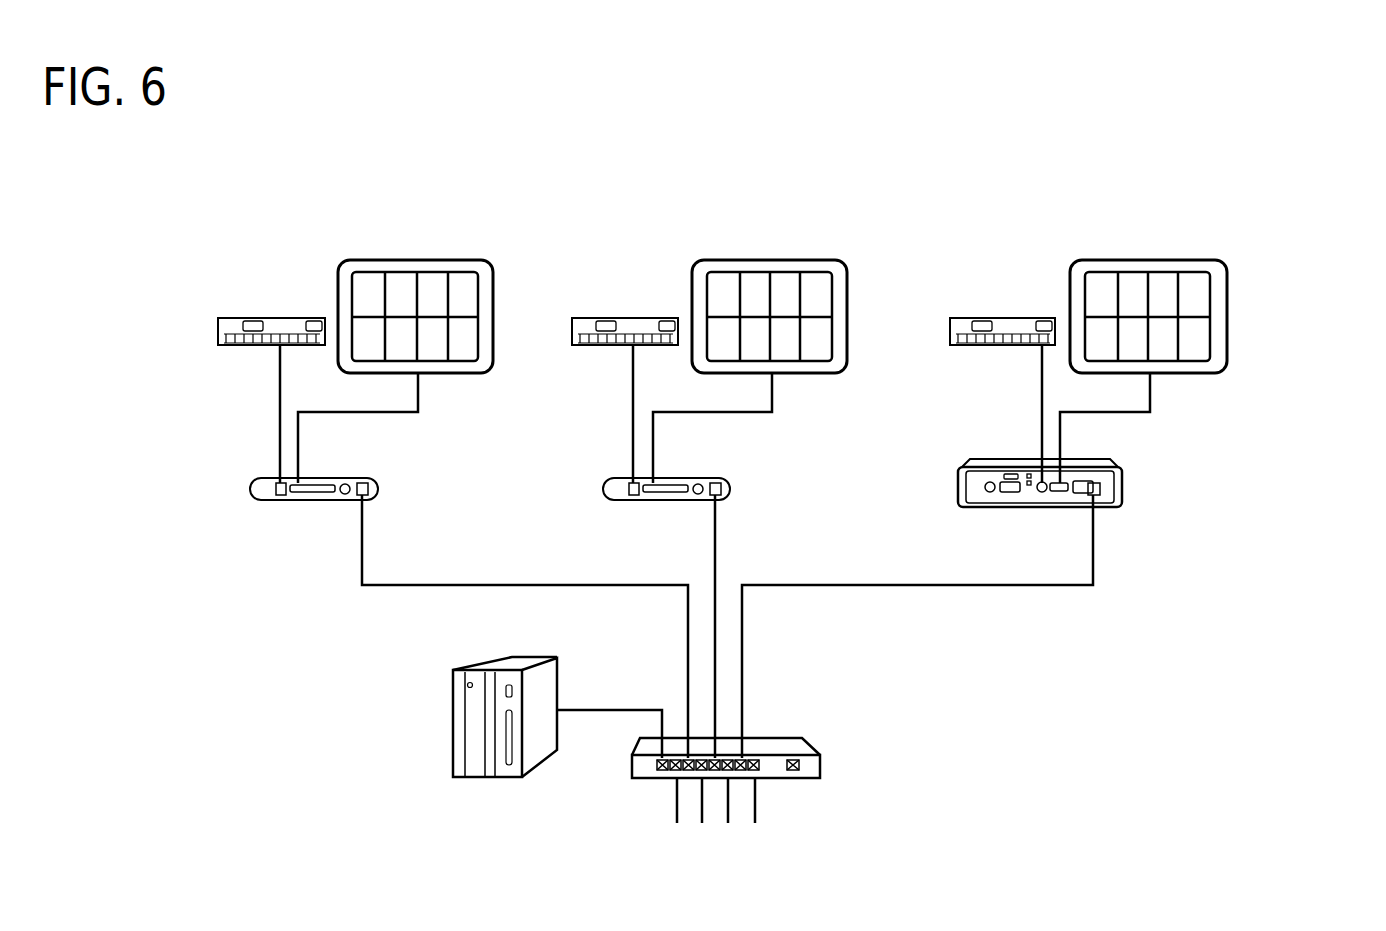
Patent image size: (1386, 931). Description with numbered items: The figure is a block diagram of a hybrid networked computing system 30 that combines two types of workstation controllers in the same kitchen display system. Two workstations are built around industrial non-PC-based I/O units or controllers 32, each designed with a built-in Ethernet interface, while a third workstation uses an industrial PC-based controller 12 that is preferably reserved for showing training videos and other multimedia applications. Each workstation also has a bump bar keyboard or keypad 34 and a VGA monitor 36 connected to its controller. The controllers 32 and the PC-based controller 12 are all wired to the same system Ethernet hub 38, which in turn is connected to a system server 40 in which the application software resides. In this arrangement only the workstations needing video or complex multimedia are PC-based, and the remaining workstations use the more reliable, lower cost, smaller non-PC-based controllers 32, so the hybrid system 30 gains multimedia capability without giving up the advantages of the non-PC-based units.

The hybrid system 30 is at (1292, 170).
The VGA monitor 36 is at (407, 266).
The bump bar keyboard 34 is at (265, 318).
The non-PC-based I/O unit or controller 32 is at (265, 485).
The industrial PC-based controller 12 is at (1003, 465).
The system Ethernet hub 38 is at (789, 745).
The system server 40 is at (472, 728).